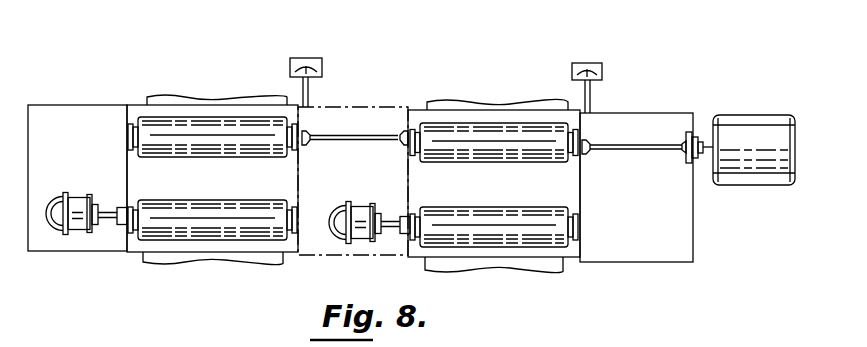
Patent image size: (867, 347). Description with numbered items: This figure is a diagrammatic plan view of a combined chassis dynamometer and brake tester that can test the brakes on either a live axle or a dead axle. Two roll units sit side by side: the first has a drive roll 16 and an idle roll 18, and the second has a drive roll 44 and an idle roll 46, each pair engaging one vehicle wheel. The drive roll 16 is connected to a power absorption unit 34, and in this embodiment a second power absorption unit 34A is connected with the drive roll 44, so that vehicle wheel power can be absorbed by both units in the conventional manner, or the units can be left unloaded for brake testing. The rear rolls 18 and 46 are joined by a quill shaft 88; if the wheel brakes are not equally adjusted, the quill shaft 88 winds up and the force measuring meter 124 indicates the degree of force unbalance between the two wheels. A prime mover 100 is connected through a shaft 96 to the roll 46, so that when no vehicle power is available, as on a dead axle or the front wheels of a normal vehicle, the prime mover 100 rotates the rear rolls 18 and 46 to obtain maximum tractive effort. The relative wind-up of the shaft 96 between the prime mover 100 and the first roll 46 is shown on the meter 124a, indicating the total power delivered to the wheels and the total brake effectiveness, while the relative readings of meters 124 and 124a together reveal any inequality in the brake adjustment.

The drive roll 16 is at (235, 210).
The idle roll 18 is at (182, 147).
The power absorption unit 34 is at (73, 203).
The power absorption unit 34A is at (362, 212).
The drive roll 44 is at (503, 217).
The idle roll 46 is at (482, 152).
The quill shaft 88 is at (360, 138).
The shaft 96 is at (628, 143).
The prime mover 100 is at (753, 133).
The force measuring meter 124 is at (313, 58).
The meter 124a is at (597, 63).